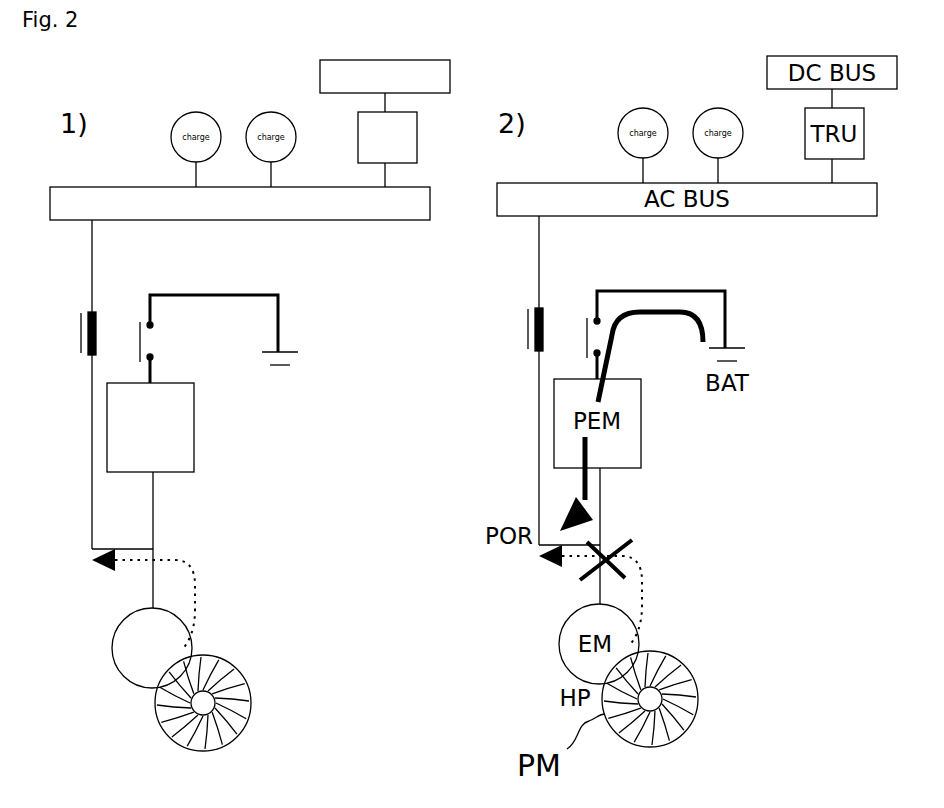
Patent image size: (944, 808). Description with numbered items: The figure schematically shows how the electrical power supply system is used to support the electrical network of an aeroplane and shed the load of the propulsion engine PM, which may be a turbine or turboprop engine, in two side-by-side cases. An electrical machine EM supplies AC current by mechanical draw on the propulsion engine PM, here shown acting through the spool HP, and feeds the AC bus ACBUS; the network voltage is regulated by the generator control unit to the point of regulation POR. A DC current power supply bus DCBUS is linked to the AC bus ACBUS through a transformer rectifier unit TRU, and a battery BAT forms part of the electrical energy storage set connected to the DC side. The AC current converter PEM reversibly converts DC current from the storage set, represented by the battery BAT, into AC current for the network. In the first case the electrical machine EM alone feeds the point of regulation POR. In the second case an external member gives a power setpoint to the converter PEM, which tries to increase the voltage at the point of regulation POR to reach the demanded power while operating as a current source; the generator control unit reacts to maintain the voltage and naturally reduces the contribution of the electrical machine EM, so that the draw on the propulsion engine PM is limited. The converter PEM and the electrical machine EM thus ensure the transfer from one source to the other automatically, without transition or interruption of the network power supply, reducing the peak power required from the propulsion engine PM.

The DC current power supply bus DCBUS is at (385, 76).
The transformer rectifier unit TRU is at (387, 137).
The AC bus ACBUS is at (240, 203).
The battery BAT is at (280, 376).
The AC current converter PEM is at (150, 427).
The point of regulation POR is at (76, 549).
The electrical machine EM is at (152, 648).
The high pressure spool HP is at (181, 703).
The propulsion engine PM is at (158, 718).